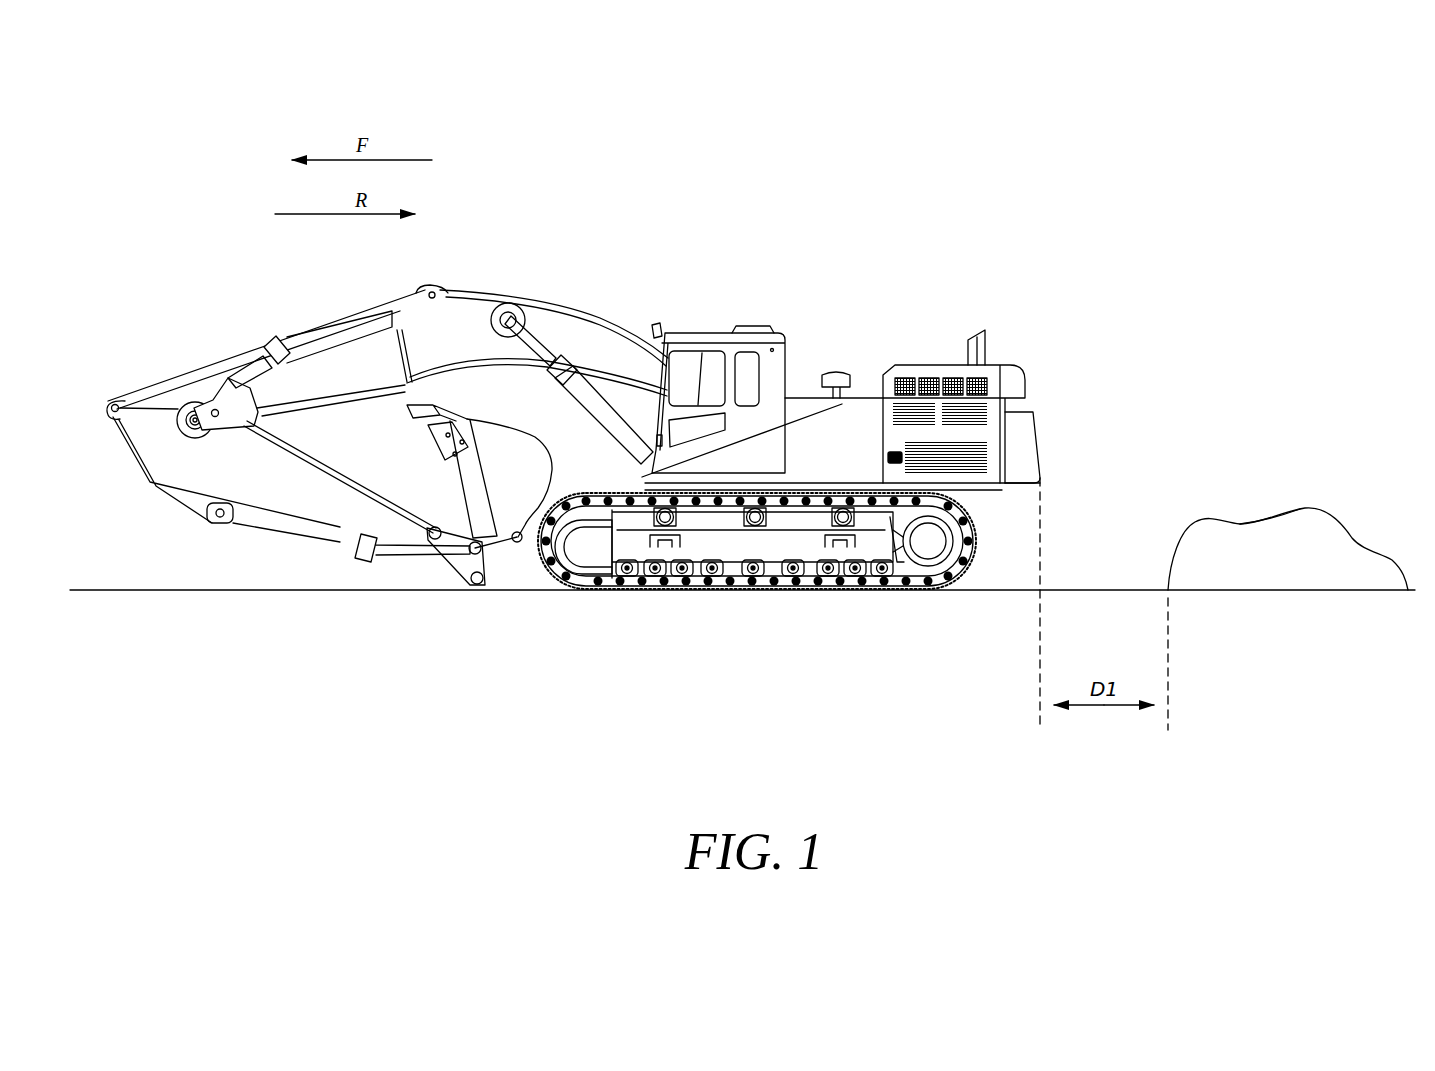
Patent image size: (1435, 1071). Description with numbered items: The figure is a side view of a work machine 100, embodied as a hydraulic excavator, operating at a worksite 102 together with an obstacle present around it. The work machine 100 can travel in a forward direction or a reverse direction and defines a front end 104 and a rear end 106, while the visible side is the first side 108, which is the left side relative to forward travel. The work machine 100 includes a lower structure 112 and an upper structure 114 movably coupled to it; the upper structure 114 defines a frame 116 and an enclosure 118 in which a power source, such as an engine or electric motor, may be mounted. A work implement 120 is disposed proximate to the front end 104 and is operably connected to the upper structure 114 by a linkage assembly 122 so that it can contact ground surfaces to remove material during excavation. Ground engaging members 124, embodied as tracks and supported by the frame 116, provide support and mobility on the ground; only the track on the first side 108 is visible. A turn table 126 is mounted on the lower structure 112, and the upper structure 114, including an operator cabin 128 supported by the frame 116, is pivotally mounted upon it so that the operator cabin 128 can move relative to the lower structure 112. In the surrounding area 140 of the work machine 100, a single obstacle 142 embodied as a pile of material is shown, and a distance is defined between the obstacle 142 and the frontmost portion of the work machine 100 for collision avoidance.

The work machine 100 is at (912, 188).
The worksite 102 is at (233, 257).
The front end 104 is at (95, 427).
The rear end 106 is at (1049, 478).
The first side 108 is at (888, 620).
The lower structure 112 is at (992, 550).
The upper structure 114 is at (1040, 364).
The frame 116 is at (662, 470).
The enclosure 118 is at (975, 437).
The work implement 120 is at (493, 442).
The linkage assembly 122 is at (164, 365).
The ground engaging members 124 is at (740, 576).
The turn table 126 is at (803, 484).
The operator cabin 128 is at (745, 361).
The surrounding area 140 is at (1225, 475).
The obstacle 142 is at (1288, 540).